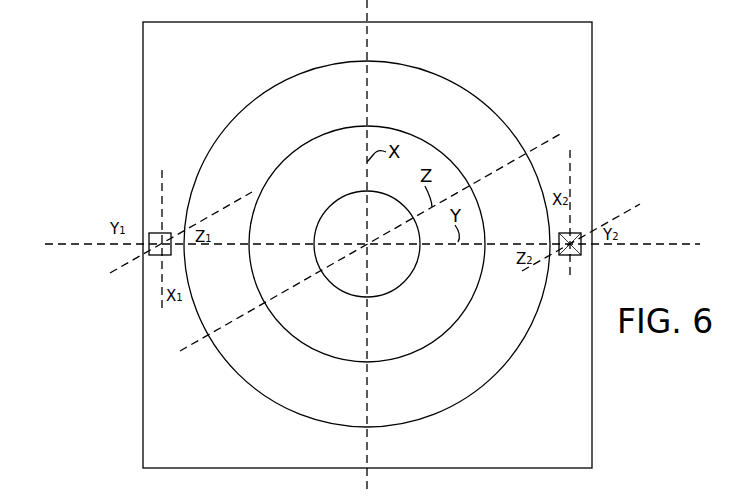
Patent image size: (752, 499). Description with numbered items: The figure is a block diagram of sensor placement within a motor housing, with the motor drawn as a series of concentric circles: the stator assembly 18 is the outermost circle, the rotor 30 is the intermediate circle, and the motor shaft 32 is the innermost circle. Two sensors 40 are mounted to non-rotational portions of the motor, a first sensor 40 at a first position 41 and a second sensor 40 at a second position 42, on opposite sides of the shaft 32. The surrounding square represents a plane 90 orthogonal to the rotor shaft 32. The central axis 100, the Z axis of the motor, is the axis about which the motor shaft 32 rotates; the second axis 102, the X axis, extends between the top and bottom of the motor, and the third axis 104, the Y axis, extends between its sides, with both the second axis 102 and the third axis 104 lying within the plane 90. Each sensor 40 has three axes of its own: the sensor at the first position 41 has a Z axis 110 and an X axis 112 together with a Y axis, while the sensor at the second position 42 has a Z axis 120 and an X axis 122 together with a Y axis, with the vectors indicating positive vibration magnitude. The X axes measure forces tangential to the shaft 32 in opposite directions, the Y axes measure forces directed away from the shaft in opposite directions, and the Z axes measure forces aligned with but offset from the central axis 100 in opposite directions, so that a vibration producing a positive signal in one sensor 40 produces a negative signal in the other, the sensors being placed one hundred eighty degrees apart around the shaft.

The stator assembly 18 is at (243, 107).
The rotor 30 is at (299, 147).
The motor shaft 32 is at (345, 197).
The sensor 40 is at (150, 248).
The first position 41 is at (150, 238).
The second position 42 is at (582, 248).
The plane 90 is at (593, 67).
The central axis 100 is at (537, 145).
The second axis 102 is at (369, 56).
The third axis 104 is at (66, 222).
The Z axis 110 is at (228, 207).
The X axis 112 is at (163, 180).
The Z axis 120 is at (637, 213).
The X axis 122 is at (572, 178).